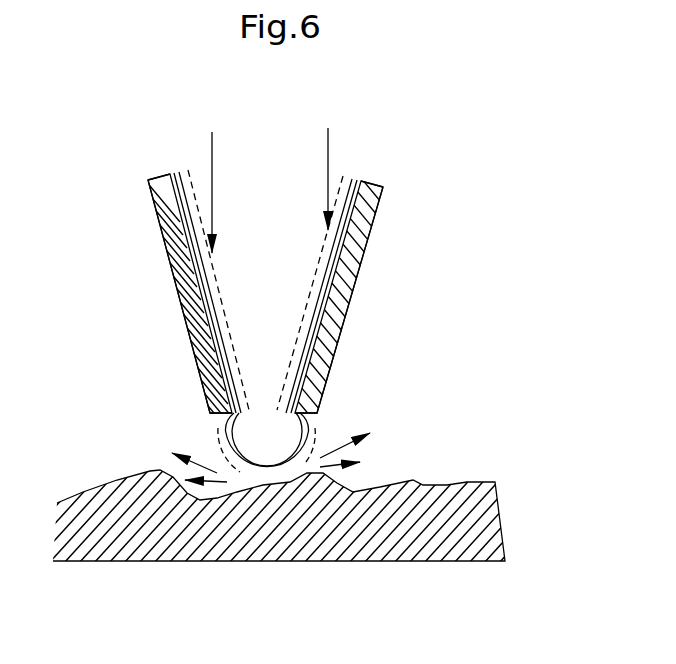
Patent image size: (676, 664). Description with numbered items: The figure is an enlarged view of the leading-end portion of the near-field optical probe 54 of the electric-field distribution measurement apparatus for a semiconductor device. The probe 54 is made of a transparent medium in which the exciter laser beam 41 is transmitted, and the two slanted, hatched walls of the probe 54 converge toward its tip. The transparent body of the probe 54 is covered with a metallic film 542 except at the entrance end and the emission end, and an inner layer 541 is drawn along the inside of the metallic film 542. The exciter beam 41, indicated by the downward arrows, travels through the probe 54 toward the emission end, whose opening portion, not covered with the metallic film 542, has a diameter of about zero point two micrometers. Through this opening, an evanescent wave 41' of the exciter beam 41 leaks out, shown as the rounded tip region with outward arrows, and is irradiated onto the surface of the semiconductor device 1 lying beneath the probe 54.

The near-field optical probe 54 is at (413, 212).
The coating layer of electrode 541 is at (302, 263).
The metallic film 542 is at (338, 322).
The exciter laser beam 41 is at (272, 175).
The evanescent wave 41' is at (296, 434).
The semiconductor device 1 is at (473, 480).